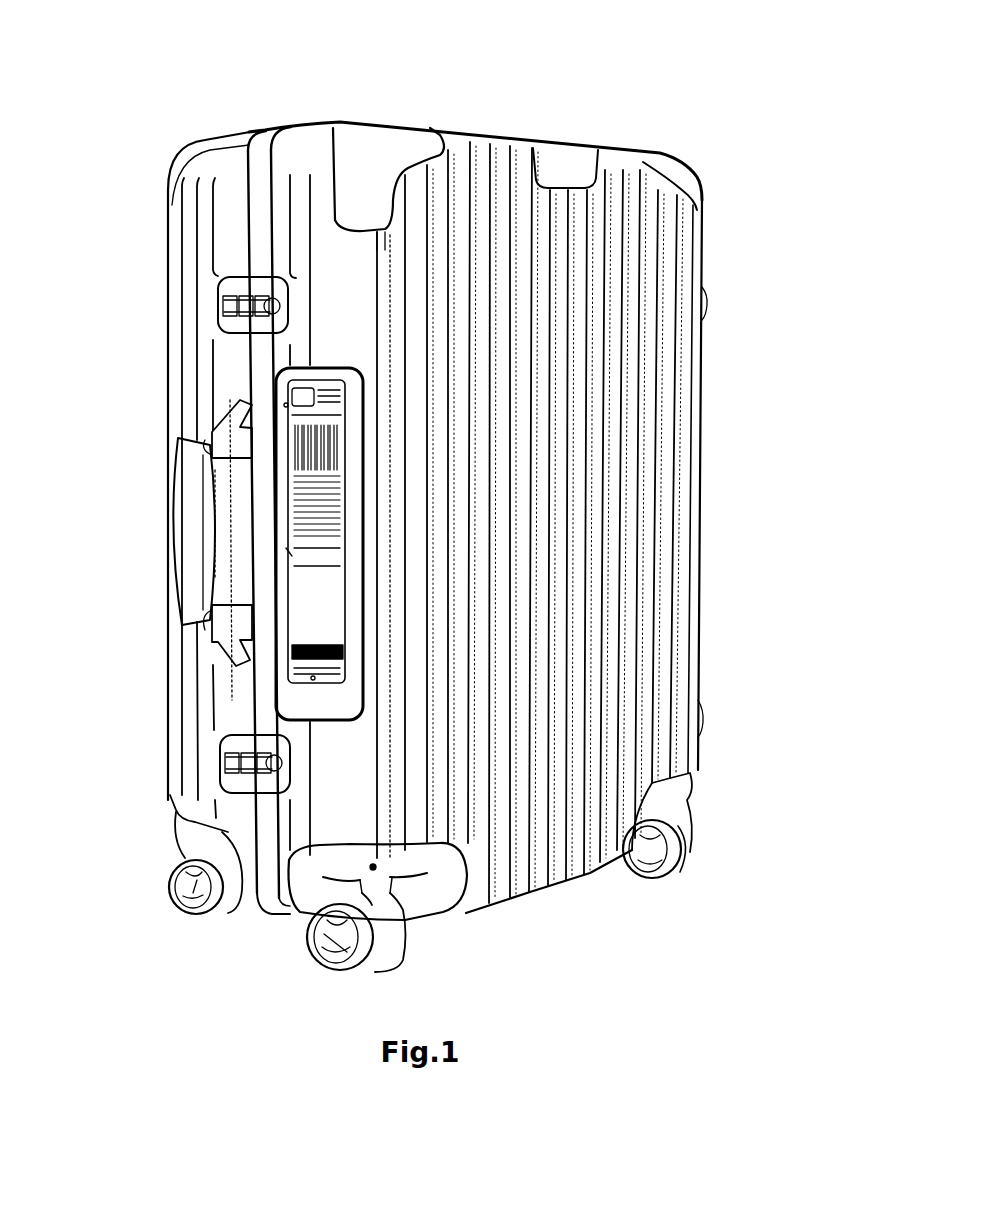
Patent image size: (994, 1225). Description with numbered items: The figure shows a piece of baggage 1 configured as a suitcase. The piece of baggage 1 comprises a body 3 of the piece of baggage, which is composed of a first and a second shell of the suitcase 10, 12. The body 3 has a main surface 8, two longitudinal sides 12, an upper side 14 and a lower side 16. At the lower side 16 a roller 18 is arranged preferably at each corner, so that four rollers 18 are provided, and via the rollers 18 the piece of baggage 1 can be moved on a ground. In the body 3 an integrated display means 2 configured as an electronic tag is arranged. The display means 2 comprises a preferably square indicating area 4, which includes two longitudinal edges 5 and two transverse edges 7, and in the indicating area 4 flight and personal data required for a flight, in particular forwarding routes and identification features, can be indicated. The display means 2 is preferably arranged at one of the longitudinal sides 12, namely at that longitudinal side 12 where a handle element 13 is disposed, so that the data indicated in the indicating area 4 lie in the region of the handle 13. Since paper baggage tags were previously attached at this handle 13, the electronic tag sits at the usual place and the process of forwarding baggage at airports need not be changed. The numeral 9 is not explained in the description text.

The piece of baggage 1 is at (736, 94).
The display means 2 is at (290, 390).
The body of the piece of baggage 3 is at (596, 144).
The indicating area 4 is at (306, 556).
The longitudinal edges 5 is at (285, 598).
The transverse edges 7 is at (285, 407).
The main surface 8 is at (665, 247).
The window 9 is at (290, 552).
The first shell of the suitcase 10 is at (170, 158).
The longitudinal side 12 is at (263, 188).
The handle element 13 is at (185, 506).
The upper side 14 is at (428, 118).
The lower side 16 is at (538, 892).
The roller 18 is at (172, 880).